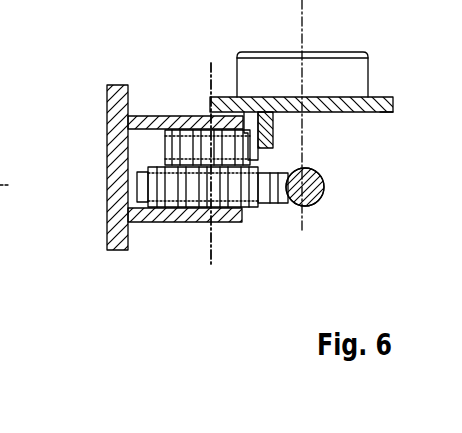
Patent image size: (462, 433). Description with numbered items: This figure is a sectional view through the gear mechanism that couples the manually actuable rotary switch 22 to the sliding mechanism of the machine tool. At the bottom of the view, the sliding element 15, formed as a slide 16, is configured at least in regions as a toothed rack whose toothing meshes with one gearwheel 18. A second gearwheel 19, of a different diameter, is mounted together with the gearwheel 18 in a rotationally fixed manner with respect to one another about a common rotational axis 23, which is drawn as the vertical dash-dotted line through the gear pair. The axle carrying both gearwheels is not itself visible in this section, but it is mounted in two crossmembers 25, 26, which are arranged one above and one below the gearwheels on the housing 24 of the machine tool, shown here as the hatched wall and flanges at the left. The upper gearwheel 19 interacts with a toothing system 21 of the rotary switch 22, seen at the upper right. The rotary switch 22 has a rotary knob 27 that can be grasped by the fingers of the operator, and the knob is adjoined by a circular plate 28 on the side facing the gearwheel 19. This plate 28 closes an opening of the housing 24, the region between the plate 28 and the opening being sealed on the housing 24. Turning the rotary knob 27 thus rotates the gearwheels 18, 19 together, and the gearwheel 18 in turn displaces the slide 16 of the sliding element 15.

The sliding element 15 is at (323, 180).
The slide 16 is at (305, 187).
The gearwheel 18 is at (184, 192).
The gearwheel 19 is at (188, 147).
The toothing system 21 is at (257, 117).
The rotary switch 22 is at (373, 58).
The rotational axis 23 is at (213, 258).
The housing 24 is at (107, 194).
The crossmember 25 is at (160, 124).
The crossmember 26 is at (156, 210).
The rotary knob 27 is at (330, 68).
The circular plate 28 is at (377, 104).